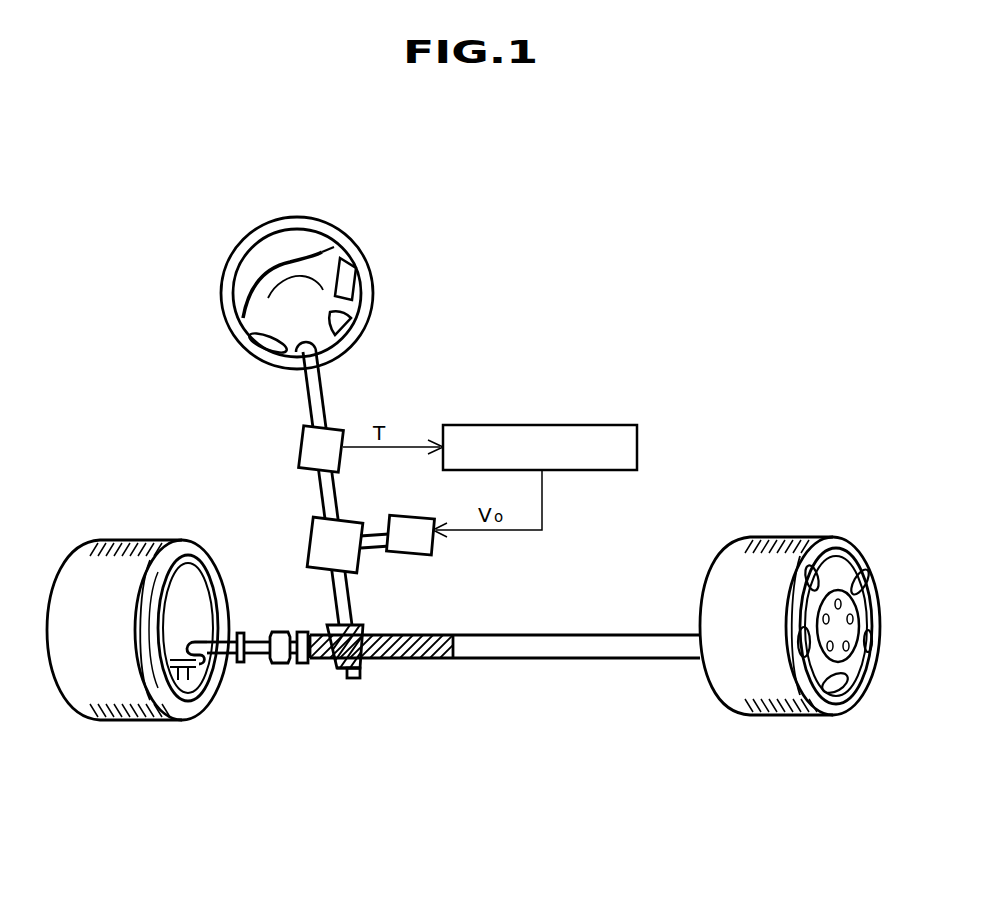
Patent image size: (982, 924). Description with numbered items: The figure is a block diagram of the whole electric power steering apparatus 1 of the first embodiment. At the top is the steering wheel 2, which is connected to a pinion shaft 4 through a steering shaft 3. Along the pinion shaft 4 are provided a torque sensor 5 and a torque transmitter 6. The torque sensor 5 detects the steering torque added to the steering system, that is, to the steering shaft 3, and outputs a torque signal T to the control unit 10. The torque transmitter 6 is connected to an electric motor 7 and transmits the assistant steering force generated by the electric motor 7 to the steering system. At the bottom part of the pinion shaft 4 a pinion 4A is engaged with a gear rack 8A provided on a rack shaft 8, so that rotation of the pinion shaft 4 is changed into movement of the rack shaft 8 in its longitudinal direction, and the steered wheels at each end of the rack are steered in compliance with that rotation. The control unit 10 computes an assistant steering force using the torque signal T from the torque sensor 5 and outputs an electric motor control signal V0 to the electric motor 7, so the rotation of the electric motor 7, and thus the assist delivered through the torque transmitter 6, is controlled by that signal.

The electric power steering apparatus 1 is at (503, 290).
The steering wheel 2 is at (222, 304).
The steering shaft 3 is at (310, 400).
The pinion shaft 4 is at (352, 610).
The pinion 4A is at (358, 660).
The torque sensor 5 is at (315, 455).
The torque transmitter 6 is at (320, 548).
The electric motor 7 is at (418, 553).
The rack shaft 8 is at (562, 658).
The gear rack 8A is at (392, 658).
The control unit 10 is at (568, 425).